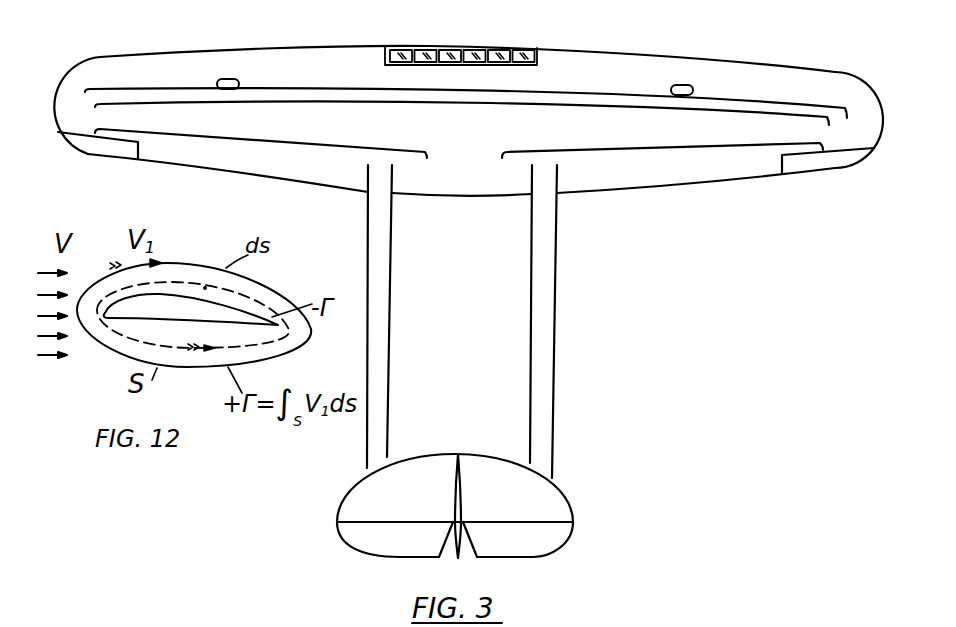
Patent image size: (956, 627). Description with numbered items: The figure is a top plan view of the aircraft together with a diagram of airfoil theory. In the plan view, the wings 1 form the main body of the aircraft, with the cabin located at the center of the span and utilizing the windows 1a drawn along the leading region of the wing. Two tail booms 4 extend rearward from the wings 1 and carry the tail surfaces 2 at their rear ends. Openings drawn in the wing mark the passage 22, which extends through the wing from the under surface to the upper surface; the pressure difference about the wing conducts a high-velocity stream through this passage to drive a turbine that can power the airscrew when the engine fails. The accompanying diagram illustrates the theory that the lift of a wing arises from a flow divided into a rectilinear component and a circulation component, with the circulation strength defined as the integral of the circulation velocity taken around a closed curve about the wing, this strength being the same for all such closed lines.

The wings 1 is at (717, 82).
The windows 1a is at (520, 55).
The tail surfaces 2 is at (537, 503).
The tail booms 4 is at (543, 313).
The passage 22 is at (228, 78).